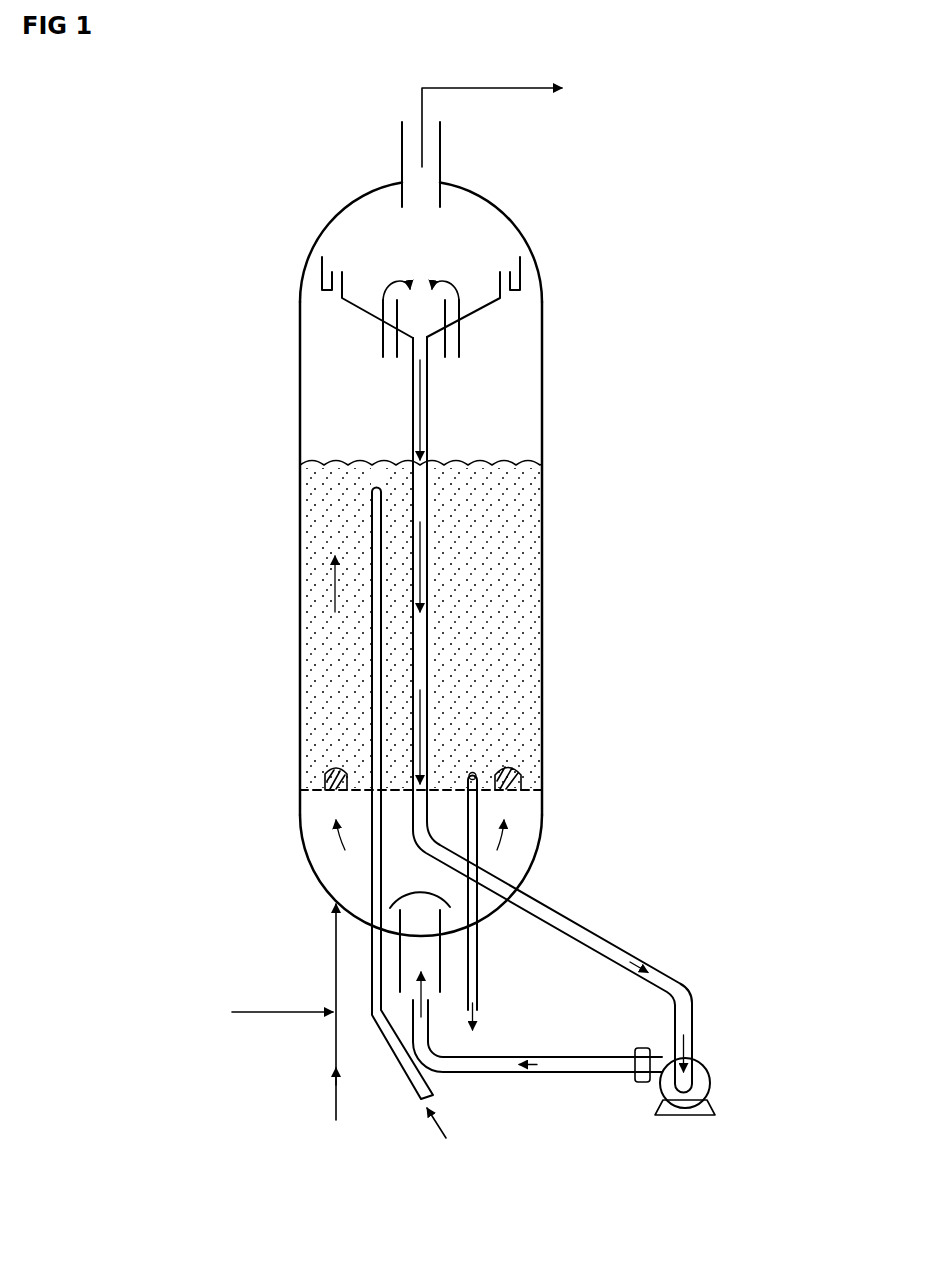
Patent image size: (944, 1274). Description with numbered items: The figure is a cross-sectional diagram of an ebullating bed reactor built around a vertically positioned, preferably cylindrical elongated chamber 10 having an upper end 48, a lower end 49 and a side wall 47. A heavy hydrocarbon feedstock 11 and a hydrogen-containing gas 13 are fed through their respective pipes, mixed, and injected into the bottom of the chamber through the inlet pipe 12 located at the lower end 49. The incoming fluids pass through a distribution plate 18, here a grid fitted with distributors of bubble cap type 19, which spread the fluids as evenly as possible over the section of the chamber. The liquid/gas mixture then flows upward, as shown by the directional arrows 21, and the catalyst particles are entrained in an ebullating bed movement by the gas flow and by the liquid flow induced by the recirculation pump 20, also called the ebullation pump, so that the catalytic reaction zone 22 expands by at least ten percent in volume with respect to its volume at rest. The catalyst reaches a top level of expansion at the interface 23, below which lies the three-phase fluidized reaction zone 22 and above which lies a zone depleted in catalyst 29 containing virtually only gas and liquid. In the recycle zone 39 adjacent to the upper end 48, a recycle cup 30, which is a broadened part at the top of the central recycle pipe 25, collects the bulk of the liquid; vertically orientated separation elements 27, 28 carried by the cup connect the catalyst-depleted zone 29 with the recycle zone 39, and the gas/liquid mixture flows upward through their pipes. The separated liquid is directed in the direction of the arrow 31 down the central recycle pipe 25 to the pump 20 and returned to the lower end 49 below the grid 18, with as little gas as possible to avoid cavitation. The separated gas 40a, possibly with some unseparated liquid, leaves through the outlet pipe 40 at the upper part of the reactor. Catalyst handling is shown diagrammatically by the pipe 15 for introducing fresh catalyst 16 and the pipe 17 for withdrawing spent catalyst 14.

The elongated chamber 10 is at (298, 290).
The heavy hydrocarbon feedstock 11 is at (252, 1012).
The inlet pipe 12 is at (336, 950).
The hydrogen-containing gas 13 is at (336, 1100).
The spent catalyst 14 is at (480, 1015).
The pipe for introduction of fresh catalyst 15 is at (407, 1078).
The fresh catalyst 16 is at (437, 1130).
The pipe for withdrawal of spent catalyst 17 is at (478, 948).
The distribution plate 18 is at (537, 772).
The distributors of bubble cap type 19 is at (330, 772).
The recirculation pump 20 is at (713, 1071).
The directional arrows 21 is at (335, 583).
The catalytic reaction zone 22 is at (492, 579).
The interface 23 is at (358, 465).
The central recycle pipe 25 is at (408, 396).
The separation element 27 is at (460, 341).
The separation element 28 is at (494, 283).
The zone depleted in catalyst 29 is at (486, 404).
The recycle cup 30 is at (488, 560).
The arrow 31 is at (427, 426).
The recycle zone 39 is at (376, 265).
The outlet pipe 40 is at (441, 152).
The gas 40a is at (524, 90).
The side wall 47 is at (543, 440).
The upper end 48 is at (497, 208).
The lower end 49 is at (537, 852).